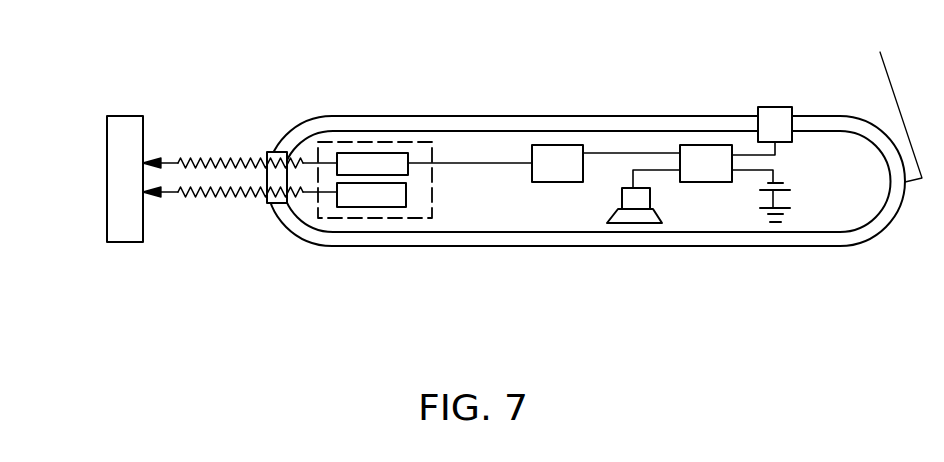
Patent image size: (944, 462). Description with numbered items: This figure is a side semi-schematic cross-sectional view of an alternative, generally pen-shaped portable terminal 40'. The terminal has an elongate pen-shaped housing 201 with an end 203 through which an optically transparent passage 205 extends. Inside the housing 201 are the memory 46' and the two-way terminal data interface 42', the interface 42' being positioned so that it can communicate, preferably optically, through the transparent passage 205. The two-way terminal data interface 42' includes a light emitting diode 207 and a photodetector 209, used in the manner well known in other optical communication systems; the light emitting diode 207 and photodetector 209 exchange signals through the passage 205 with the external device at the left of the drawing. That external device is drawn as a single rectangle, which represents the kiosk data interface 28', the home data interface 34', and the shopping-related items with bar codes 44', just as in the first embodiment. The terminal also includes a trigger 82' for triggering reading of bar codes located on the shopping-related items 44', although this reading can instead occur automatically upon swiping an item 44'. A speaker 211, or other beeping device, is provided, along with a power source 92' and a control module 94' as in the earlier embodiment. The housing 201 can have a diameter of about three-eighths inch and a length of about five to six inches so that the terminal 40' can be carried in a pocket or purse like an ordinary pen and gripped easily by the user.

The portable terminal 40' is at (586, 133).
The two-way terminal data interface 42' is at (393, 119).
The memory 46' is at (535, 235).
The trigger 82' is at (774, 88).
The power source 92' is at (819, 249).
The control module 94' is at (722, 236).
The housing 201 is at (887, 102).
The end 203 is at (291, 252).
The optically transparent passage 205 is at (262, 209).
The light emitting diode 207 is at (370, 157).
The photodetector 209 is at (372, 198).
The speaker 211 is at (621, 248).
The kiosk data interface 28' is at (122, 241).
The home data interface 34' is at (122, 241).
The shopping-related items 44' is at (122, 241).